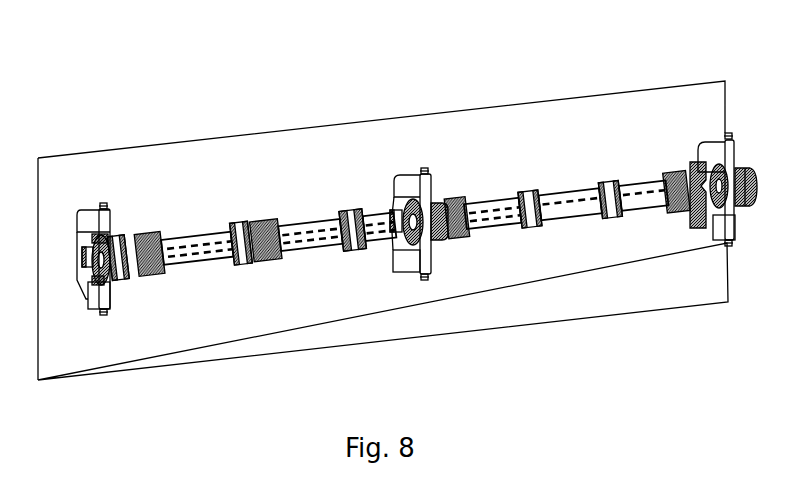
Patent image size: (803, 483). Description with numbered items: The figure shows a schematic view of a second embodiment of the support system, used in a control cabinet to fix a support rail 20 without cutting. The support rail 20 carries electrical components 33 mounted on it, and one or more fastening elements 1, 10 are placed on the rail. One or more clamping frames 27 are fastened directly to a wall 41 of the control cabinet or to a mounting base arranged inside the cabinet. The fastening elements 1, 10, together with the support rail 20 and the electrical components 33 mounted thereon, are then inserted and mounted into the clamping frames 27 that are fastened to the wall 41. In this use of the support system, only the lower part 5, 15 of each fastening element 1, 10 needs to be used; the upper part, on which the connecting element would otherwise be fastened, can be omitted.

The fastening element 1 is at (403, 212).
The fastening element 10 is at (403, 212).
The lower part 5 is at (392, 245).
The lower part 15 is at (73, 217).
The support rail 20 is at (325, 222).
The clamping frame 27 is at (85, 300).
The electrical component 33 is at (262, 220).
The wall 41 is at (192, 167).